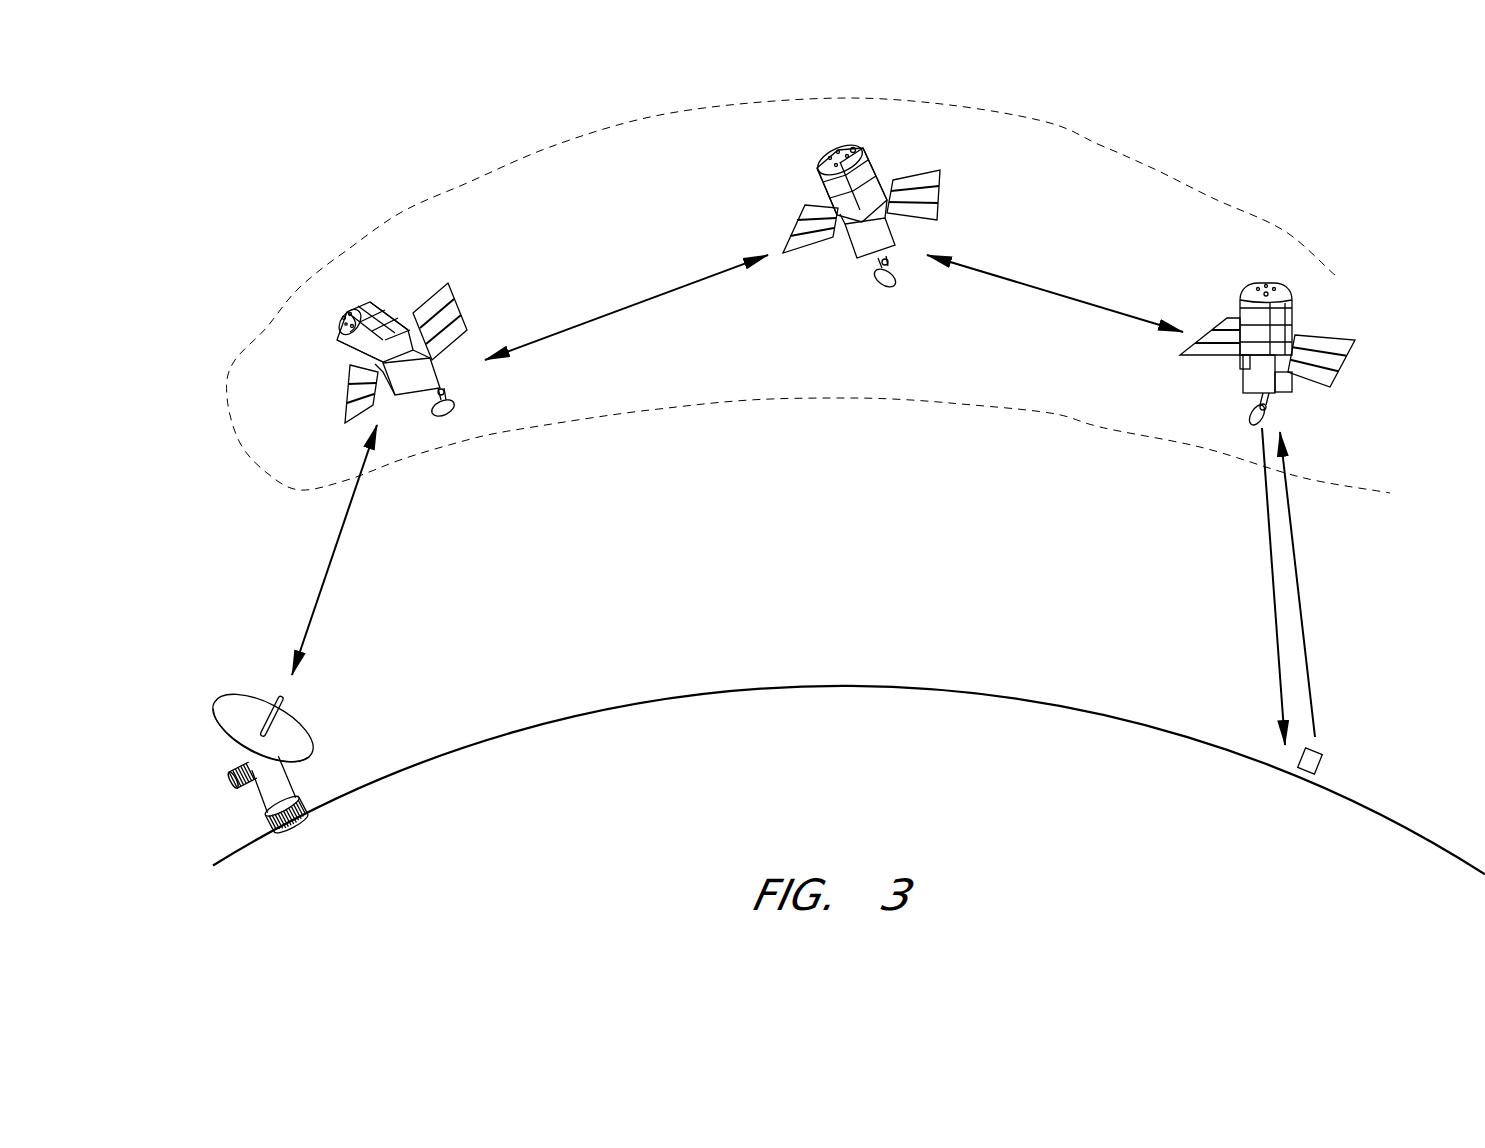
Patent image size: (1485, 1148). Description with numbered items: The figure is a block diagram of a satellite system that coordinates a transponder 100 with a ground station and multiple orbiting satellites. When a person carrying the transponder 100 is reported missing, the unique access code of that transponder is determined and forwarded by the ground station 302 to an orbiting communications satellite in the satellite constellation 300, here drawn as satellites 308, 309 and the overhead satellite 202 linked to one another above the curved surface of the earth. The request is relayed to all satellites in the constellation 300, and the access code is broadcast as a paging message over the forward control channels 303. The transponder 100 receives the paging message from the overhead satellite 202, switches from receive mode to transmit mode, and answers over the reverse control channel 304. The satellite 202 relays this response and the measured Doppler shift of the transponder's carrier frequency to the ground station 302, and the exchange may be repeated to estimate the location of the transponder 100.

The transponder 100 is at (1320, 750).
The satellite 202 is at (1263, 282).
The satellite constellation 300 is at (1103, 147).
The ground station 302 is at (240, 693).
The forward control channels 303 is at (1272, 608).
The reverse control channel 304 is at (1293, 545).
The satellite 308 is at (370, 302).
The satellite 309 is at (865, 150).